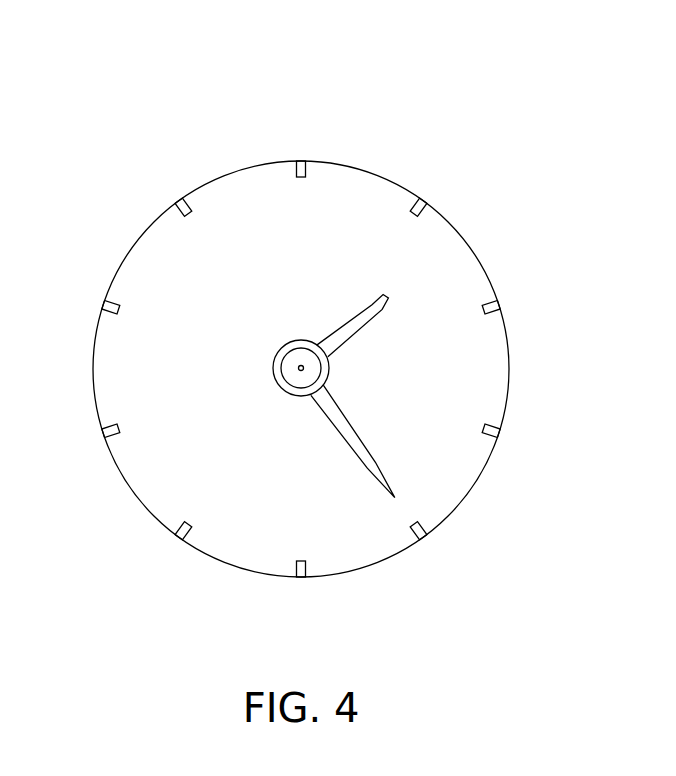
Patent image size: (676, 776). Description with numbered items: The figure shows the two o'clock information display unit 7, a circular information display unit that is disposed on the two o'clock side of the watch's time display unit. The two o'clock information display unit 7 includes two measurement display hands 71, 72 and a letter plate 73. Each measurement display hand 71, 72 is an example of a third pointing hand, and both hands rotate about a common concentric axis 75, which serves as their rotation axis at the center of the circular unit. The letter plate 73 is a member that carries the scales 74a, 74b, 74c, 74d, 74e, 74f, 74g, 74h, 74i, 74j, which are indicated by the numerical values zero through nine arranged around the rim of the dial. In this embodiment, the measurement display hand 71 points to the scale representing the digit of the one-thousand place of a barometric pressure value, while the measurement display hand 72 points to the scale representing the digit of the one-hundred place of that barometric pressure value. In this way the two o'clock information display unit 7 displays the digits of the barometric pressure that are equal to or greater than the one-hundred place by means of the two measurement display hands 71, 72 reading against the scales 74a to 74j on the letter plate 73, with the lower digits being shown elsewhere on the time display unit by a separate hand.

The 2 o'clock information display unit 7 is at (140, 237).
The measurement display hand 71 is at (380, 310).
The measurement display hand 72 is at (377, 482).
The letter plate 73 is at (447, 483).
The scale 74a is at (310, 183).
The scale 74b is at (413, 227).
The scale 74c is at (482, 323).
The scale 74d is at (482, 417).
The scale 74e is at (412, 515).
The scale 74f is at (293, 558).
The scale 74g is at (180, 517).
The scale 74h is at (112, 450).
The scale 74i is at (117, 303).
The scale 74j is at (200, 216).
The concentric axis 75 is at (300, 367).